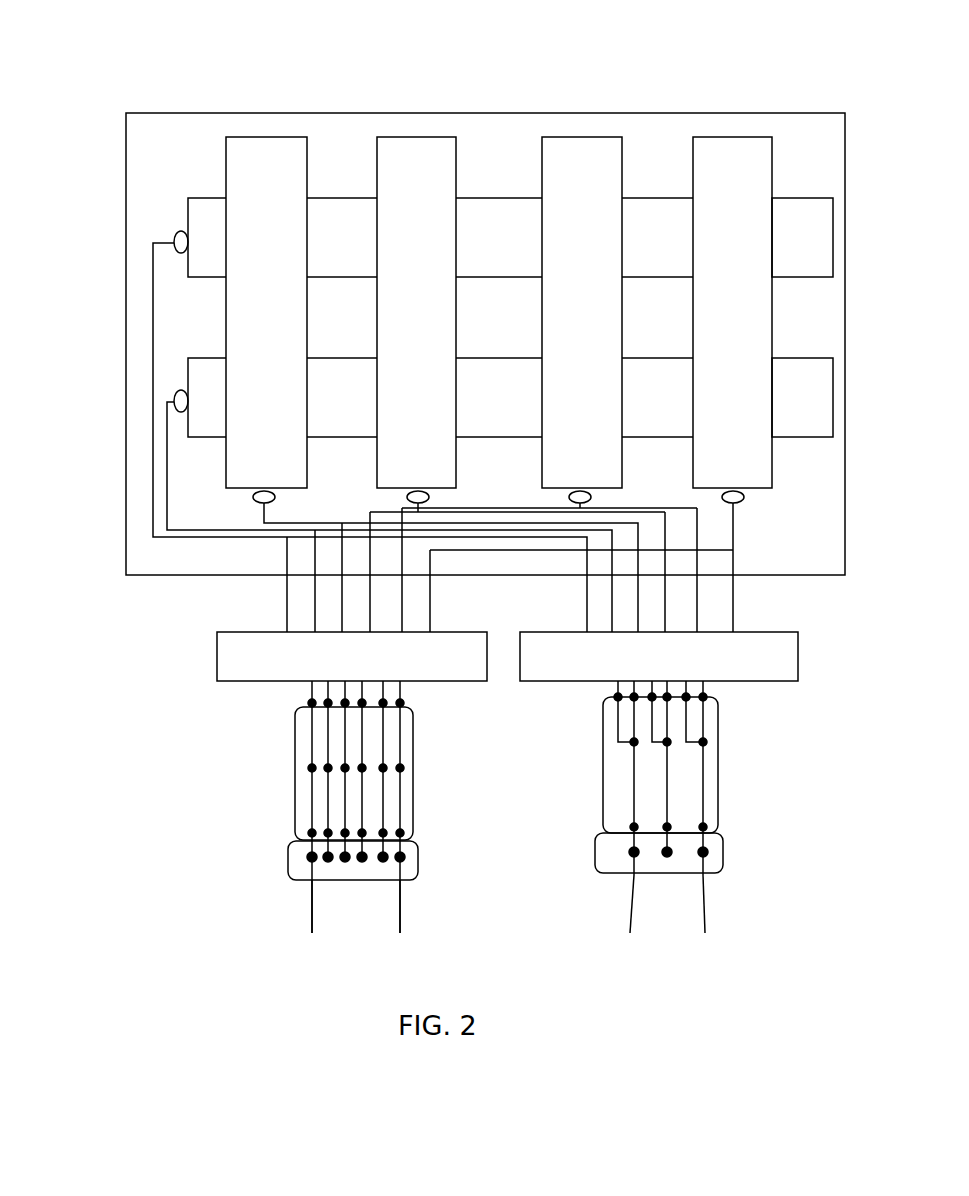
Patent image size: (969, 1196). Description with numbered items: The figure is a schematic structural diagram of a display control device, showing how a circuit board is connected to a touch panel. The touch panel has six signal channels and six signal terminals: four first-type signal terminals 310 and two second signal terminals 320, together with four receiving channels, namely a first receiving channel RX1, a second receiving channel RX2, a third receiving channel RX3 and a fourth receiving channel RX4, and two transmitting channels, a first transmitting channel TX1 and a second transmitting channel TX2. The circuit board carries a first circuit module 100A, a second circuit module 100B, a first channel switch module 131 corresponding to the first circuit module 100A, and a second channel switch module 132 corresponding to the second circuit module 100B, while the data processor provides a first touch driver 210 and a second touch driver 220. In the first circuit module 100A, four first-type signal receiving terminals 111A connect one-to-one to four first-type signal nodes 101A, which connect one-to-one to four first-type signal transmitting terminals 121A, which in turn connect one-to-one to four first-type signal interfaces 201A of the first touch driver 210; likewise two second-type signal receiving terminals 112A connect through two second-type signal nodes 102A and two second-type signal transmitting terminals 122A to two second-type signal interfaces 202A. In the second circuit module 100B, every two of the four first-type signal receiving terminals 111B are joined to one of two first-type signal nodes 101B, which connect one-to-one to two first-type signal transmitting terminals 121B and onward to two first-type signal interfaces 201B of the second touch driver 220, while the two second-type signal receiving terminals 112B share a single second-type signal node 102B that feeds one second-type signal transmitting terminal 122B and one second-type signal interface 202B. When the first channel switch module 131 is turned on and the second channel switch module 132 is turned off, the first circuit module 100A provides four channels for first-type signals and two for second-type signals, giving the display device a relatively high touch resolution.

The first receiving channel RX1 is at (271, 137).
The second receiving channel RX2 is at (417, 137).
The third receiving channel RX3 is at (579, 137).
The fourth receiving channel RX4 is at (727, 137).
The first transmitting channel TX1 is at (202, 198).
The second transmitting channel TX2 is at (200, 364).
The first-type signal terminal 310 is at (253, 495).
The second signal terminal 320 is at (174, 236).
The first channel switch module 131 is at (352, 656).
The second channel switch module 132 is at (659, 656).
The first circuit module 100A is at (295, 797).
The second circuit module 100B is at (720, 760).
The first-type signal receiving terminals of the first circuit module 111A is at (402, 702).
The second-type signal receiving terminals of the first circuit module 112A is at (308, 701).
The first-type signal receiving terminals of the second circuit module 111B is at (706, 697).
The second-type signal receiving terminals of the second circuit module 112B is at (615, 698).
The first-type signal nodes of the first circuit module 101A is at (402, 768).
The second-type signal nodes of the first circuit module 102A is at (308, 768).
The first-type signal nodes of the second circuit module 101B is at (707, 742).
The second-type signal node of the second circuit module 102B is at (632, 742).
The first-type signal transmitting terminals of the first circuit module 121A is at (402, 831).
The second-type signal transmitting terminals of the first circuit module 122A is at (308, 830).
The first-type signal transmitting terminals of the second circuit module 121B is at (707, 826).
The second-type signal transmitting terminal of the second circuit module 122B is at (632, 826).
The first touch driver 210 is at (290, 856).
The second touch driver 220 is at (724, 860).
The first-type signal interfaces of the first touch driver 201A is at (403, 922).
The second-type signal interfaces of the first touch driver 202A is at (301, 922).
The first-type signal interfaces of the second touch driver 201B is at (698, 920).
The second-type signal interface of the second touch driver 202B is at (618, 920).